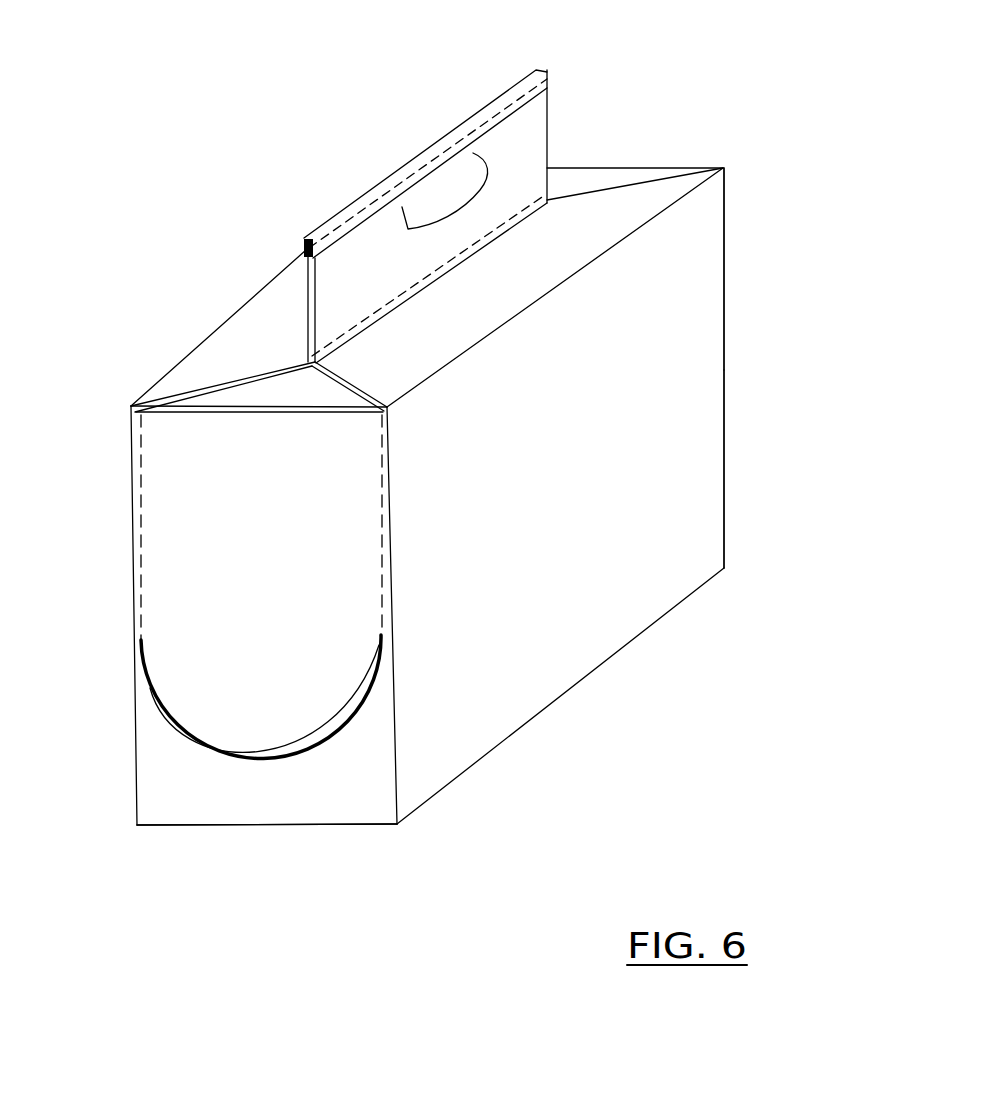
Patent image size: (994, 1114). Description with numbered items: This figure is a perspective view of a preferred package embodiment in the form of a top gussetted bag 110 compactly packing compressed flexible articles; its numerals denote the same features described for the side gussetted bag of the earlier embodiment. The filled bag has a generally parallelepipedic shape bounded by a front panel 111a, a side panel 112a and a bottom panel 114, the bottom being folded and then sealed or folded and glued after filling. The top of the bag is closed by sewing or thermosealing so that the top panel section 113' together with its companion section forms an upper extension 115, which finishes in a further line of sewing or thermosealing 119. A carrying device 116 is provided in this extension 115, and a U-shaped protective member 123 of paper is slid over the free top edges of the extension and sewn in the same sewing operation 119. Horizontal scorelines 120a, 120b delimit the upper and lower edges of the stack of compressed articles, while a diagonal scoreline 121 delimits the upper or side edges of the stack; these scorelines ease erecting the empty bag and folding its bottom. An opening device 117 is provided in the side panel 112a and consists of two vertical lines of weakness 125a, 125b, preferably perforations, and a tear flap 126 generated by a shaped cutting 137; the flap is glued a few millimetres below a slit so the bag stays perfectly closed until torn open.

The top gussetted bag 110 is at (742, 390).
The front panel 111a is at (547, 683).
The side panel 112a is at (255, 803).
The top panel section 113' is at (657, 159).
The bottom panel 114 is at (627, 636).
The extension 115 is at (537, 137).
The carrying device 116 is at (440, 195).
The opening device 117 is at (165, 571).
The line of sewing or thermosealing 119 is at (547, 88).
The horizontal scoreline 120a is at (675, 206).
The horizontal scoreline 120b is at (707, 585).
The diagonal scoreline 121 is at (338, 827).
The U-shaped protective member 123 is at (537, 72).
The vertical line of weakness 125a is at (136, 514).
The vertical line of weakness 125b is at (383, 582).
The tear flap 126 is at (179, 691).
The shaped cutting 137 is at (218, 757).